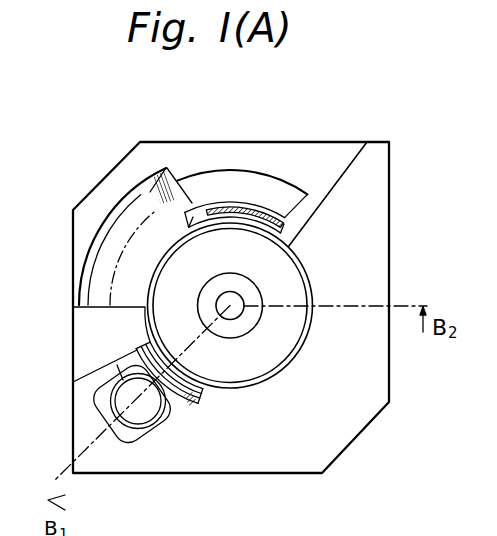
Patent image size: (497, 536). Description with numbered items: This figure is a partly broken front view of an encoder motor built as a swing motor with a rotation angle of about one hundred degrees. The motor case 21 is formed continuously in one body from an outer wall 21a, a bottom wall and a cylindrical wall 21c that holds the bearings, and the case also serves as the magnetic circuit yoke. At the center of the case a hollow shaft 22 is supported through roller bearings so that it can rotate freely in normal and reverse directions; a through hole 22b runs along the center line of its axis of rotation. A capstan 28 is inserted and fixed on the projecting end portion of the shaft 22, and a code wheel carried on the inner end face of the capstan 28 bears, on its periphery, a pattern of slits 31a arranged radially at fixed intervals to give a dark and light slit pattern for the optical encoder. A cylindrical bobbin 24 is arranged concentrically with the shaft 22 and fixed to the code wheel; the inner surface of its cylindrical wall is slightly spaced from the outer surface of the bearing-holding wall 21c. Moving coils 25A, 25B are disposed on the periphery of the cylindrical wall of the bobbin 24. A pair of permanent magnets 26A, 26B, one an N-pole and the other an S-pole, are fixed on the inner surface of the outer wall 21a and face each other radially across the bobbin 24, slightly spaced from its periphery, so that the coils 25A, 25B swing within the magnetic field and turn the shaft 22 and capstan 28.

The motor case 21 is at (160, 137).
The outer wall 21a is at (247, 195).
The cylindrical wall 21c is at (212, 210).
The shaft 22 is at (242, 350).
The through hole 22b is at (244, 313).
The bobbin 24 is at (189, 198).
The moving coil 25A is at (183, 411).
The moving coil 25B is at (250, 176).
The magnet 26A is at (189, 410).
The magnet 26B is at (279, 202).
The capstan 28 is at (297, 262).
The slits 31a is at (150, 192).